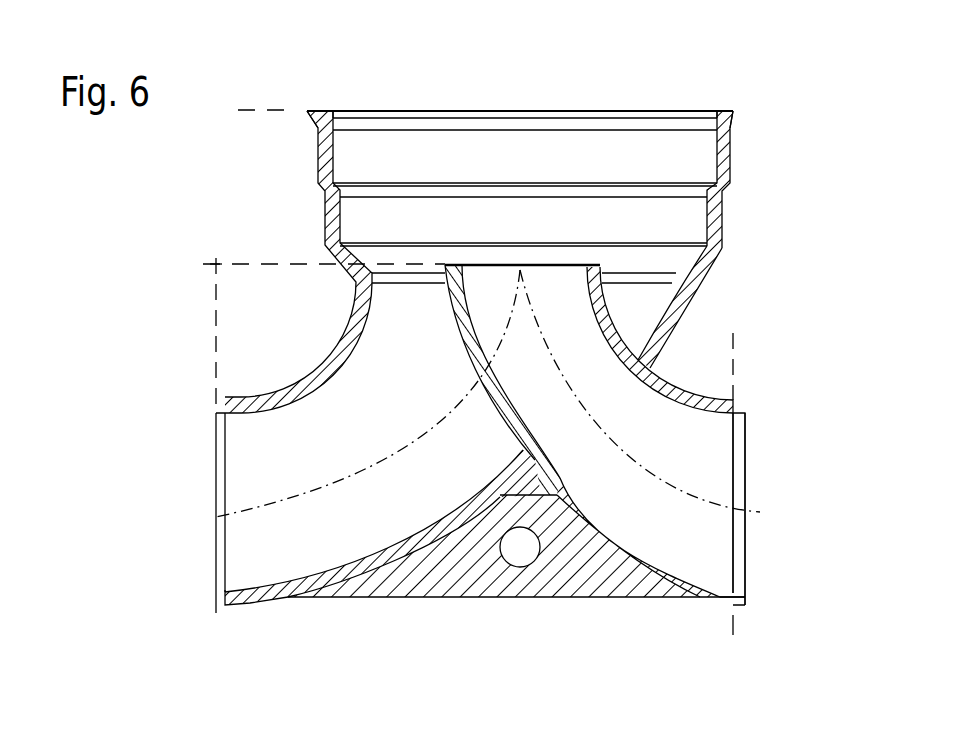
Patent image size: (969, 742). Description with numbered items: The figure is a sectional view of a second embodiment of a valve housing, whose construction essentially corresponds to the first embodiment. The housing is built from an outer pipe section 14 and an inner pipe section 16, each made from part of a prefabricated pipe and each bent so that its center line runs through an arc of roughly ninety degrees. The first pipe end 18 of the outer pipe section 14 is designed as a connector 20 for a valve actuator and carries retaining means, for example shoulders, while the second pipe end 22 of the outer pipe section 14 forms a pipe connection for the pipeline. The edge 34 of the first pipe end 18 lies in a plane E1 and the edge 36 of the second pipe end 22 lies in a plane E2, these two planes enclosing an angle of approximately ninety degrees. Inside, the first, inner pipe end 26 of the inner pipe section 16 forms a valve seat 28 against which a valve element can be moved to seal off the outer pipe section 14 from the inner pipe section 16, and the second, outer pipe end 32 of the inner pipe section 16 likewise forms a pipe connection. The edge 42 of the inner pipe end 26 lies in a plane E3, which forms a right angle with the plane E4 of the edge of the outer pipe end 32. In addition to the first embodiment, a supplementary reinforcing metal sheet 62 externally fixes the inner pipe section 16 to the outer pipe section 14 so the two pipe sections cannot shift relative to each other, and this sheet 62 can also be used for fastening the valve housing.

The outer pipe section 14 is at (607, 306).
The inner pipe section 16 is at (613, 545).
The first pipe end 18 is at (723, 145).
The connector 20 is at (694, 86).
The second pipe end 22 is at (240, 606).
The first, inner pipe end 26 is at (673, 280).
The valve seat 28 is at (588, 262).
The second, outer pipe end 32 is at (712, 598).
The edge of the first pipe end 34 is at (215, 598).
The edge of the second pipe end 36 is at (738, 112).
The edge of the pipe end 42 is at (748, 598).
The reinforcing metal sheet 62 is at (490, 578).
The plane E1 is at (215, 338).
The plane E2 is at (258, 108).
The plane E3 is at (735, 626).
The plane E4 is at (236, 262).